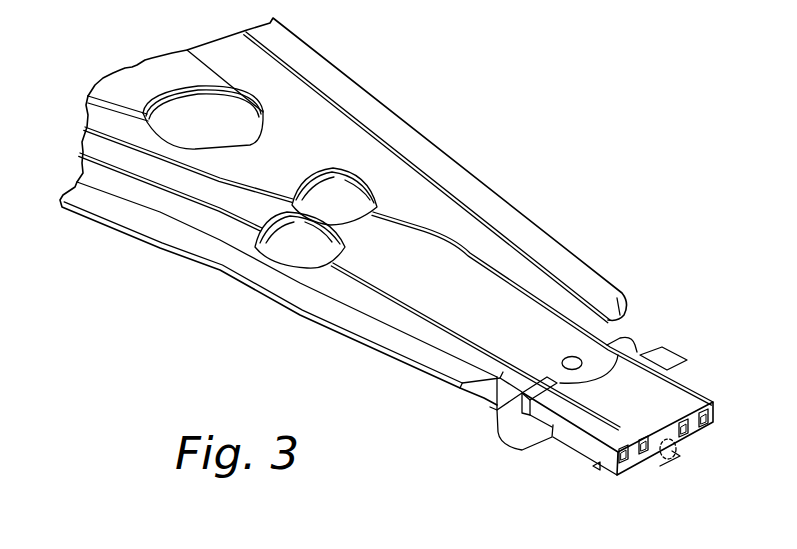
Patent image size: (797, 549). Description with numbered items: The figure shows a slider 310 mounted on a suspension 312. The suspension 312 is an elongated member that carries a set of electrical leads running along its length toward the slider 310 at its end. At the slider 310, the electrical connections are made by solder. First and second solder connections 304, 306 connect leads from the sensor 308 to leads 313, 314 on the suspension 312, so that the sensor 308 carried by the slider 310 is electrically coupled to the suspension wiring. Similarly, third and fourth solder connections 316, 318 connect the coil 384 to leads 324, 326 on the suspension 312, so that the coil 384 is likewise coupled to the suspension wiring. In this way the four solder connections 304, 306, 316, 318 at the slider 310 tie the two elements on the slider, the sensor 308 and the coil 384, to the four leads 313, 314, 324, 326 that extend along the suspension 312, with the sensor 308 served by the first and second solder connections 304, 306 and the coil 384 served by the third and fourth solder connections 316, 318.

The suspension 312 is at (484, 176).
The lead 314 is at (522, 280).
The lead 326 is at (473, 255).
The lead 324 is at (372, 290).
The lead 313 is at (372, 290).
The slider 310 is at (552, 454).
The first solder connection 304 is at (624, 467).
The second solder connection 306 is at (712, 418).
The third solder connection 316 is at (644, 458).
The fourth solder connection 318 is at (685, 440).
The sensor 308 is at (667, 461).
The coil 384 is at (663, 461).